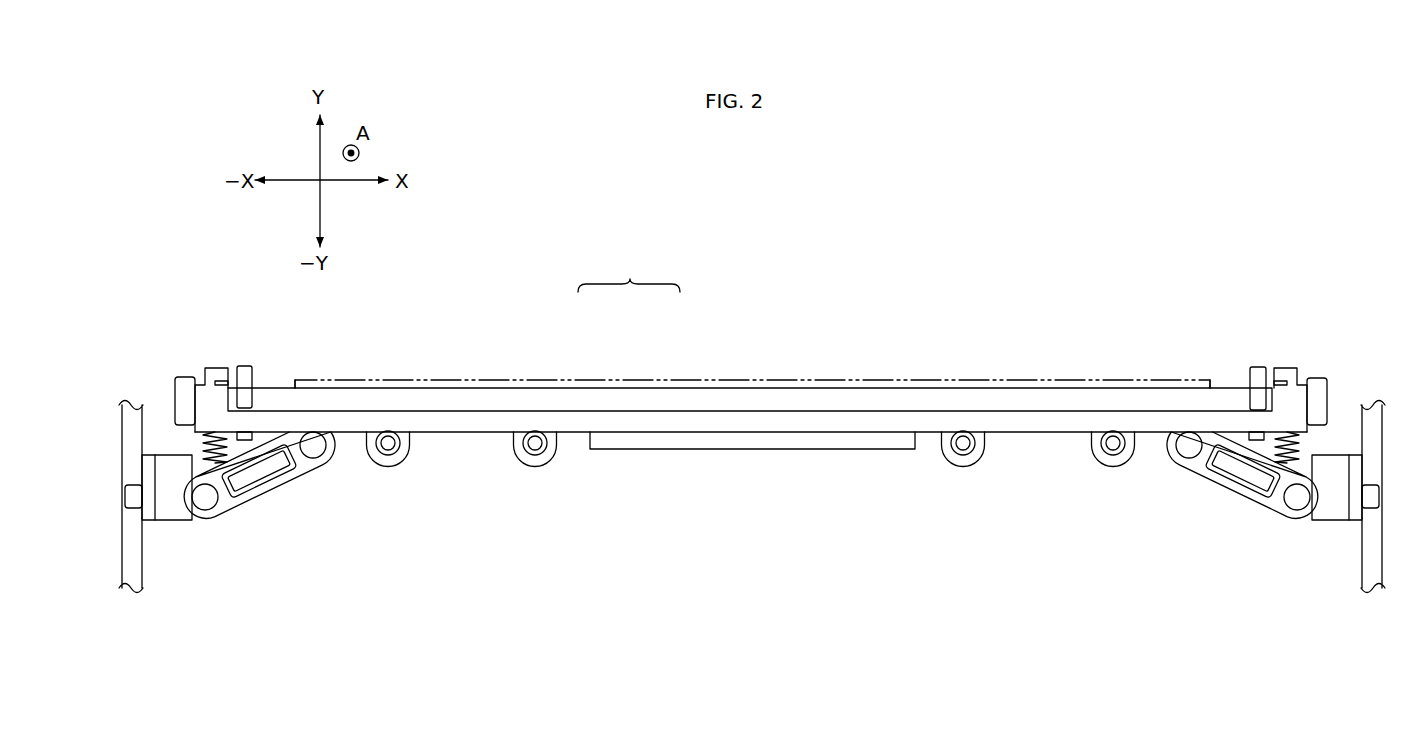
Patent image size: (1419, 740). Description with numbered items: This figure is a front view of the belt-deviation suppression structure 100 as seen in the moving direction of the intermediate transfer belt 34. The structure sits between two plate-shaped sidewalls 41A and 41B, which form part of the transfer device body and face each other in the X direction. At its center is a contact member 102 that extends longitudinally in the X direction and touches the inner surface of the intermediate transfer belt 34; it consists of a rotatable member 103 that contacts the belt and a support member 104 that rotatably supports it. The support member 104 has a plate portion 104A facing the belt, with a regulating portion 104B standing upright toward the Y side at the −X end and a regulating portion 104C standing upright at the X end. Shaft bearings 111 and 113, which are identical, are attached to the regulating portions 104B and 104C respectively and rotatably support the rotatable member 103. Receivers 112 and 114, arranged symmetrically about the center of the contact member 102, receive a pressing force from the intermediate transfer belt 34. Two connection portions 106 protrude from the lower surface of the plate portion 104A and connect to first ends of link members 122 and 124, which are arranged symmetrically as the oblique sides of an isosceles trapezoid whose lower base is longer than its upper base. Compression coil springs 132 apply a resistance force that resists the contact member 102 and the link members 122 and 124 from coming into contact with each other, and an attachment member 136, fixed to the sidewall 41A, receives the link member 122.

The belt-deviation suppression structure 100 is at (1298, 322).
The contact member 102 is at (629, 274).
The rotatable member 103 is at (598, 405).
The support member 104 is at (652, 428).
The plate portion 104A is at (750, 425).
The regulating portion 104B is at (203, 388).
The regulating portion 104C is at (1297, 393).
The connection portion 106 is at (313, 459).
The shaft bearing 111 is at (183, 395).
The receiver 112 is at (240, 365).
The shaft bearing 113 is at (1318, 395).
The receiver 114 is at (1258, 365).
The link member 122 is at (268, 493).
The link member 124 is at (1218, 490).
The compression coil spring 132 is at (202, 455).
The attachment member 136 is at (166, 498).
The intermediate transfer belt 34 is at (835, 378).
The sidewall 41A is at (147, 580).
The sidewall 41B is at (1358, 578).